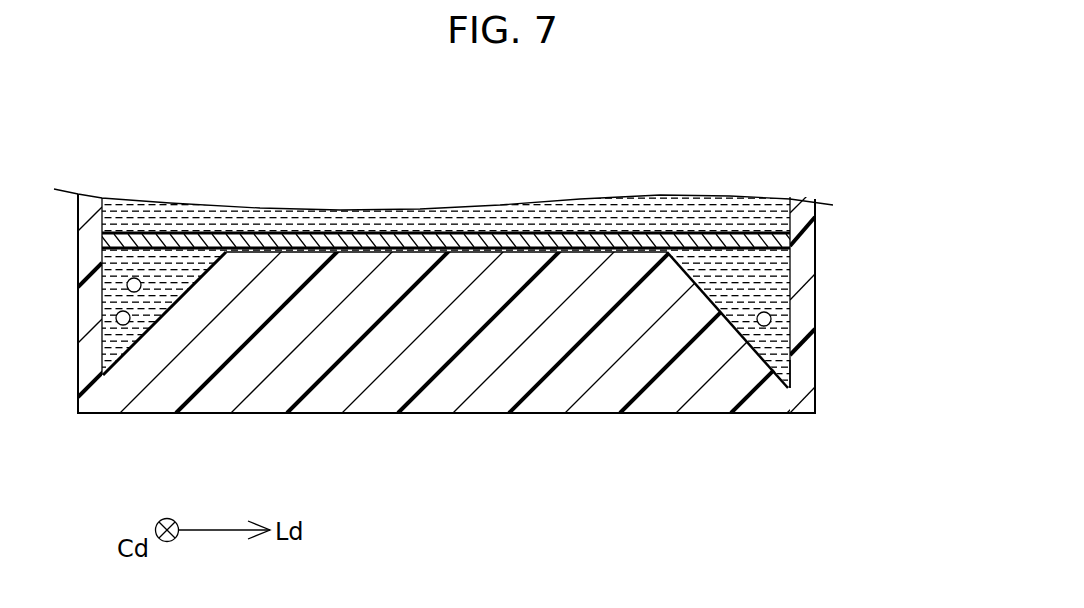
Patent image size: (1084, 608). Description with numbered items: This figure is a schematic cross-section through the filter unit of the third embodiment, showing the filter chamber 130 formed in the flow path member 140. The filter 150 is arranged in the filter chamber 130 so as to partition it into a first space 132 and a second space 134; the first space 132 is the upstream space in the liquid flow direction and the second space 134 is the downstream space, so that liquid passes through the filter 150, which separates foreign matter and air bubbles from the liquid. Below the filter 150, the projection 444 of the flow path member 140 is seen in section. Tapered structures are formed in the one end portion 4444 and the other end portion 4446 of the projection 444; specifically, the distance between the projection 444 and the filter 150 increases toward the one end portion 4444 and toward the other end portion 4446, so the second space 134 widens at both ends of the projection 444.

The filter chamber 130 is at (501, 288).
The first space 132 is at (772, 220).
The second space 134 is at (488, 318).
The flow path member 140 is at (482, 414).
The filter 150 is at (662, 233).
The projection 444 is at (738, 300).
The one end portion 4444 is at (116, 360).
The other end portion 4446 is at (767, 352).